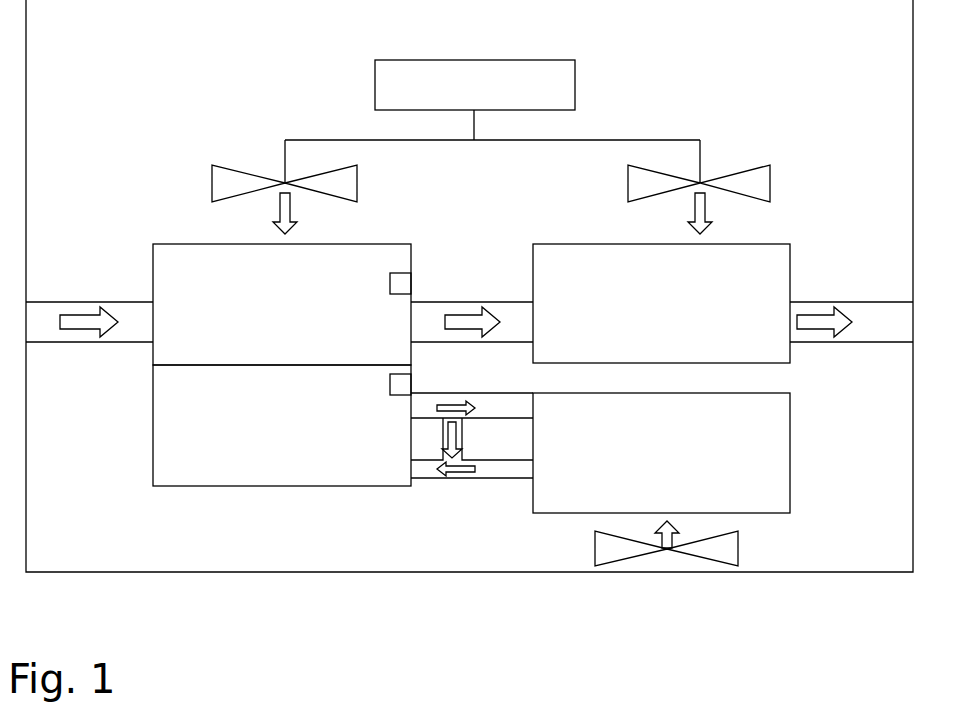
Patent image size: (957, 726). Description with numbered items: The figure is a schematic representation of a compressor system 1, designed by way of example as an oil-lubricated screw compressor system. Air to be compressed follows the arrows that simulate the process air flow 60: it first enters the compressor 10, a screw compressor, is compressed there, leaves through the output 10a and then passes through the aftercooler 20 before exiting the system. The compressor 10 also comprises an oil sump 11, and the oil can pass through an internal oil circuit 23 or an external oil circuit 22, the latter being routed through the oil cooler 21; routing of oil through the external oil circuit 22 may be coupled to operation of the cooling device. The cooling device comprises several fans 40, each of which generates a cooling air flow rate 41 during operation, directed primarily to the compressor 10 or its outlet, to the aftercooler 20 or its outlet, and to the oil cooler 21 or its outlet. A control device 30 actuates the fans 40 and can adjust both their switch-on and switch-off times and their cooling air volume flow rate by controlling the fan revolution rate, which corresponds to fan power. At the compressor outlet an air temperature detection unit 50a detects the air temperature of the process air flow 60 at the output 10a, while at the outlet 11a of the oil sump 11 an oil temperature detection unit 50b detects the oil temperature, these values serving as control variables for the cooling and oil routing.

The compressor system 1 is at (464, 28).
The compressor 10 is at (265, 291).
The oil sump 11 is at (265, 474).
The output from the compressor 10a is at (412, 302).
The outlet of the oil sump 11a is at (412, 394).
The aftercooler 20 is at (643, 291).
The oil cooler 21 is at (643, 444).
The external oil circuit 22 is at (487, 470).
The internal oil circuit 23 is at (437, 466).
The control device 30 is at (456, 99).
The fan 40 is at (212, 181).
The cooling air flow rate 41 is at (277, 198).
The air temperature detection unit 50a is at (411, 254).
The oil temperature detection unit 50b is at (400, 397).
The process air flow 60 is at (813, 325).